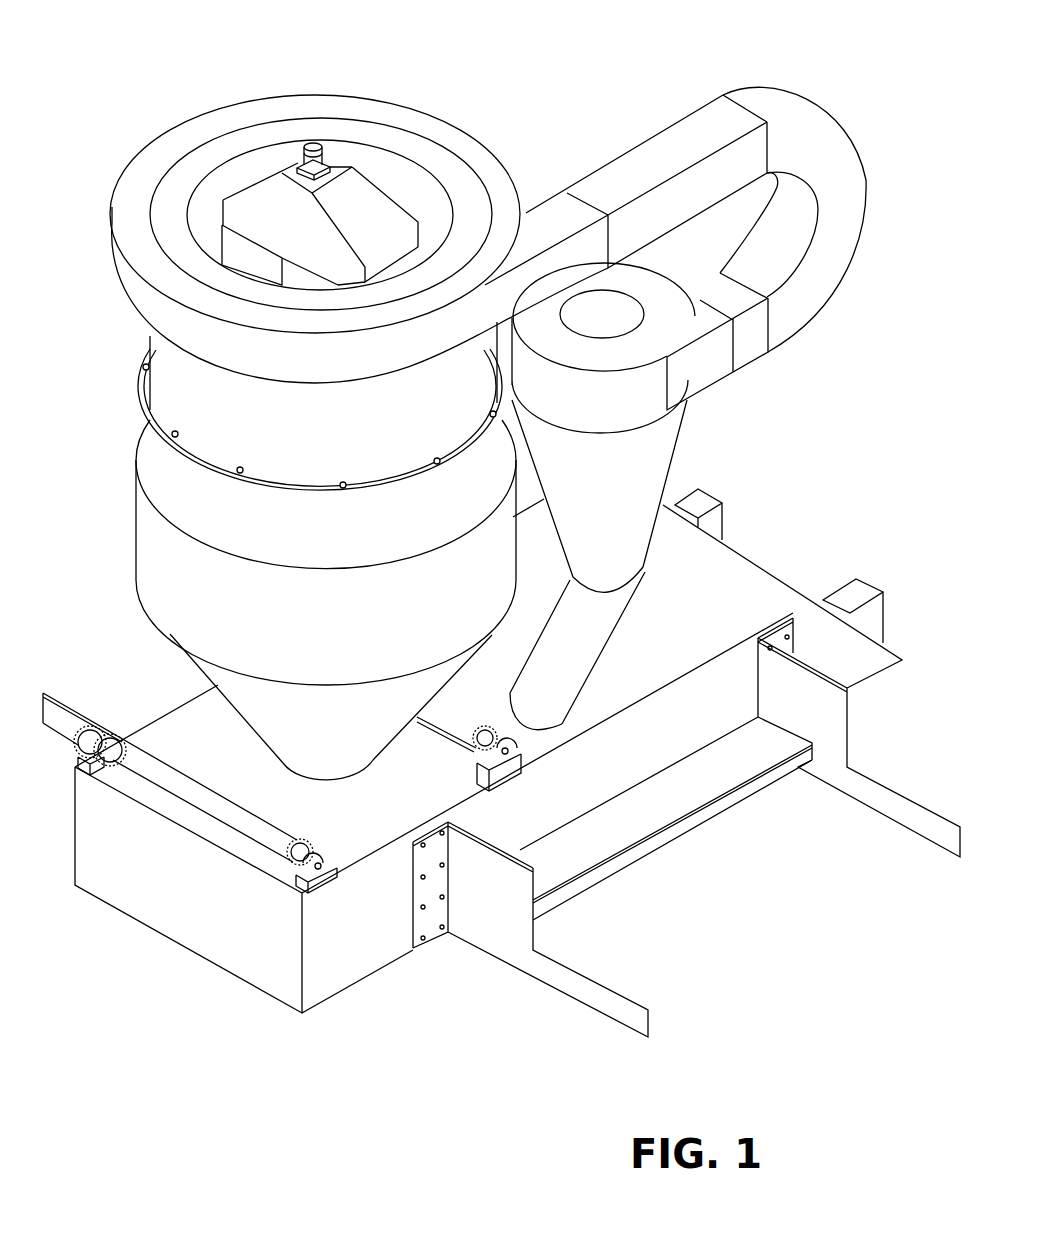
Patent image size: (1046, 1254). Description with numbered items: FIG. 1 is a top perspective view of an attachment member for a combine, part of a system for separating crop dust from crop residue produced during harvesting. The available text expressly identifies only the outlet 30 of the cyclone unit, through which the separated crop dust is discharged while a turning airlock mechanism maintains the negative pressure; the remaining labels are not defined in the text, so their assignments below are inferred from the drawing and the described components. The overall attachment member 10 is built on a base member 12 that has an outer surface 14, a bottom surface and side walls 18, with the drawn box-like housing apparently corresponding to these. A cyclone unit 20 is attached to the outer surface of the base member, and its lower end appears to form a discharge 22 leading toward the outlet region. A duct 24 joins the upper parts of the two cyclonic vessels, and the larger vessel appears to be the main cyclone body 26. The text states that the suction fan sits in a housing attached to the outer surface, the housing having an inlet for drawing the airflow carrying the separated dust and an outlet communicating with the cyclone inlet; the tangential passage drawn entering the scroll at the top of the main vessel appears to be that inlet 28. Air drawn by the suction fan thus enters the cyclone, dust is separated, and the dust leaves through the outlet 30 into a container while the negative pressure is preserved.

The cyclone separator system 10 is at (216, 94).
The platform 12 is at (787, 534).
The platform top surface 14 is at (165, 748).
The housing box 18 is at (184, 883).
The secondary cyclone 20 is at (633, 464).
The discharge chute 22 is at (520, 730).
The return duct 24 is at (737, 346).
The primary cyclone body 26 is at (310, 546).
The inlet duct 28 is at (550, 217).
The outlet 30 is at (330, 780).